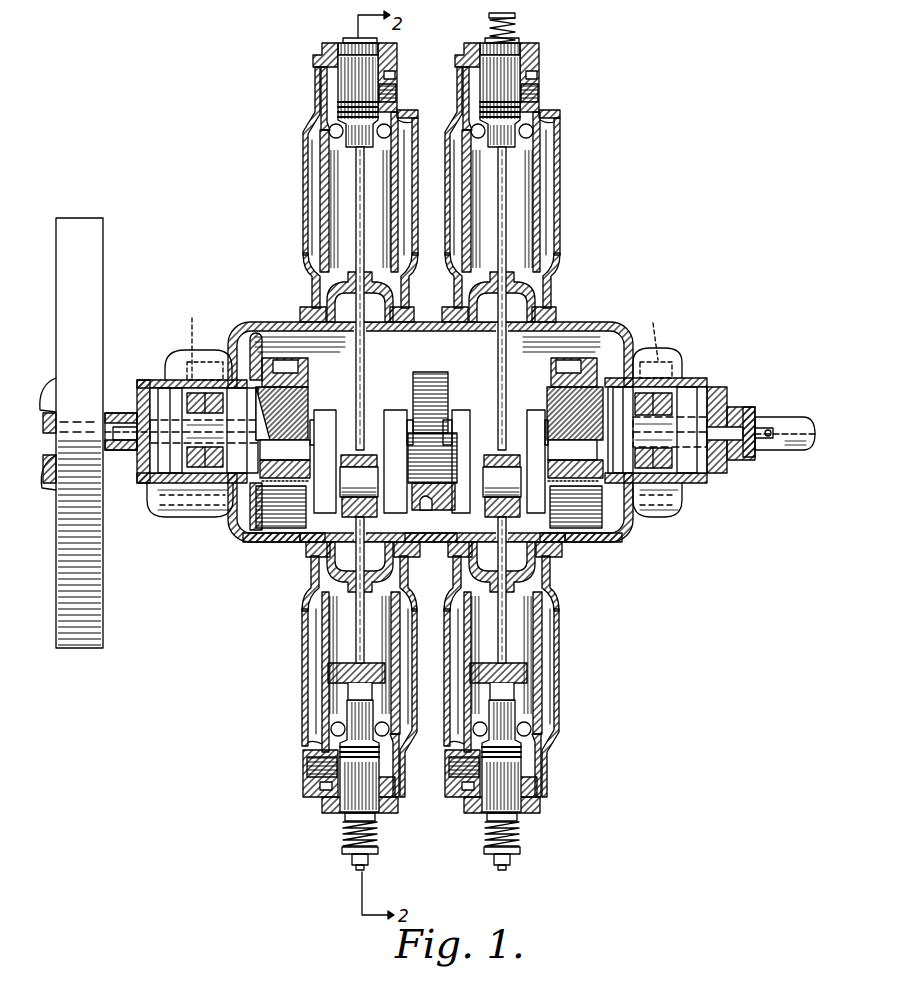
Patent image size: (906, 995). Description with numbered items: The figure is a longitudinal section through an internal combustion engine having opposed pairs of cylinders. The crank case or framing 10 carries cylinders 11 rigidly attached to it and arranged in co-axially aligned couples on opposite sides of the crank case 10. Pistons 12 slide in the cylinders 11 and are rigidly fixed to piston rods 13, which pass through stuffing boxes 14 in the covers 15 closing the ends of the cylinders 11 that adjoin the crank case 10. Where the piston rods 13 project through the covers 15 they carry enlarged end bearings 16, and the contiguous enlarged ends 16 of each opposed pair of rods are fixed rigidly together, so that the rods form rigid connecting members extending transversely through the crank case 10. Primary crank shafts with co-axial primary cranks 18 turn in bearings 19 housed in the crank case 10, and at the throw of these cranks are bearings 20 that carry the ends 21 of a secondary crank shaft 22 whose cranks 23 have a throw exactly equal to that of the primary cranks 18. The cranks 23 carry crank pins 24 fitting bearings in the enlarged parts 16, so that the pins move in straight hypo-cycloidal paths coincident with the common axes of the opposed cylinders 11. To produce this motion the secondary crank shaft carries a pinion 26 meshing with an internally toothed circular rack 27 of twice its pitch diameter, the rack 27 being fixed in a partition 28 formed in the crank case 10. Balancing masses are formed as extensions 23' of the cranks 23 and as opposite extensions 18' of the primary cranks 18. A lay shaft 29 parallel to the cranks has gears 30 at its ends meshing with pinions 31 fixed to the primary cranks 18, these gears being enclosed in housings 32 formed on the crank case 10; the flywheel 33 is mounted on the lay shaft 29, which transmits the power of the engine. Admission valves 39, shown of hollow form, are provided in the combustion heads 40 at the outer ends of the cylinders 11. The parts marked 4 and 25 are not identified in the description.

The cylinder head cap 4 is at (447, 82).
The crank case 10 is at (582, 328).
The cylinders 11 is at (332, 222).
The pistons 12 is at (308, 288).
The piston rods 13 is at (366, 360).
The stuffing boxes 14 is at (330, 318).
The covers 15 is at (400, 306).
The enlarged end bearings 16 is at (300, 545).
The primary cranks 18 is at (410, 369).
The extensions of the primary cranks 18' is at (431, 364).
The bearings 19 is at (205, 500).
The bearings 20 is at (243, 543).
The secondary crank shaft 21 is at (431, 460).
The secondary crank shaft 22 is at (270, 496).
The cranks 23 is at (395, 450).
The extensions of the cranks 23' is at (442, 471).
The crank pins 24 is at (430, 476).
The crankcase interior 25 is at (532, 510).
The pinion 26 is at (400, 508).
The internally toothed circular rack 27 is at (413, 394).
The partition 28 is at (448, 394).
The lay shaft 29 is at (770, 417).
The gears 30 is at (424, 339).
The pinions 31 is at (165, 378).
The housings 32 is at (712, 387).
The flywheel 33 is at (104, 579).
The admission valves 39 is at (460, 131).
The combustion heads 40 is at (406, 800).